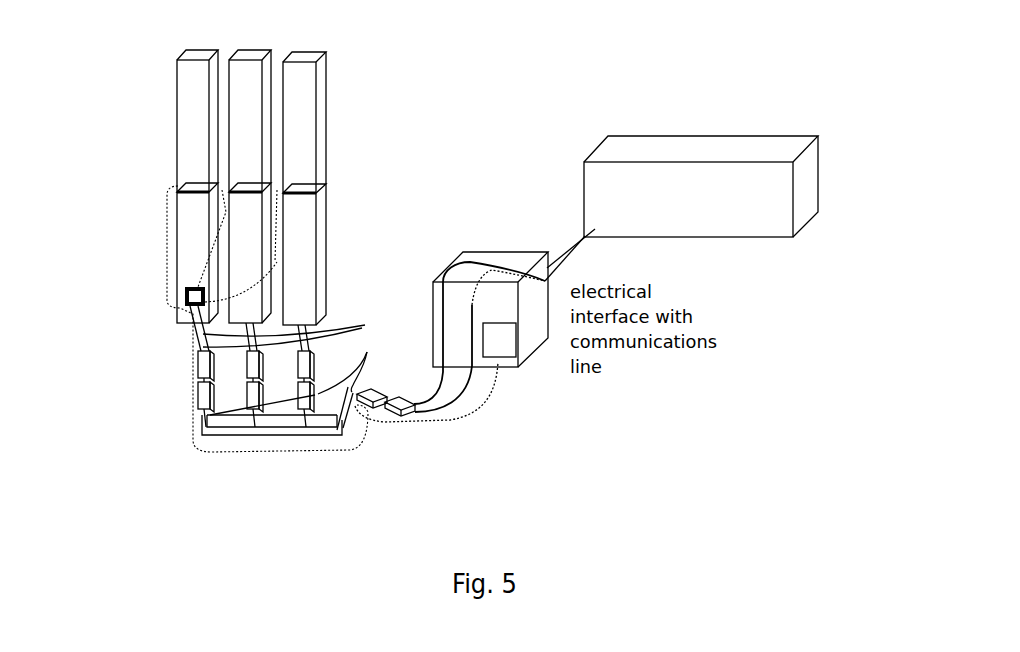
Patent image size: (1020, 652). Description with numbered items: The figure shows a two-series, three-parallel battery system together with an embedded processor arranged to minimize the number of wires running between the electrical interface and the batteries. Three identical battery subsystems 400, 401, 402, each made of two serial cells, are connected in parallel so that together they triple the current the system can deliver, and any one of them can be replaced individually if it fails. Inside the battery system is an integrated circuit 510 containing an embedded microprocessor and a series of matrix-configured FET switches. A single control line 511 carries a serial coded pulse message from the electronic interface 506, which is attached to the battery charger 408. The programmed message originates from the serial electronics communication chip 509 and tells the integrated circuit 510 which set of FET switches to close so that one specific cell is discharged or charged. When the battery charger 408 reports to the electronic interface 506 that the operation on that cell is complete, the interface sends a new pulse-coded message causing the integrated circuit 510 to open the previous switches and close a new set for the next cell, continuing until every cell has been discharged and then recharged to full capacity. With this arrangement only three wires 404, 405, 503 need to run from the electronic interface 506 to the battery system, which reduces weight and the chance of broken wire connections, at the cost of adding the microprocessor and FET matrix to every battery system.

The battery subsystem 400 is at (176, 62).
The battery subsystem 401 is at (236, 60).
The battery subsystem 402 is at (285, 62).
The wire 503 is at (167, 233).
The wire 404 is at (365, 326).
The wire 405 is at (304, 341).
The electronic interface 506 is at (526, 253).
The battery charger 408 is at (697, 237).
The integrated circuit 510 is at (183, 296).
The single control line 511 is at (509, 381).
The serial electronics communication chip 509 is at (494, 366).